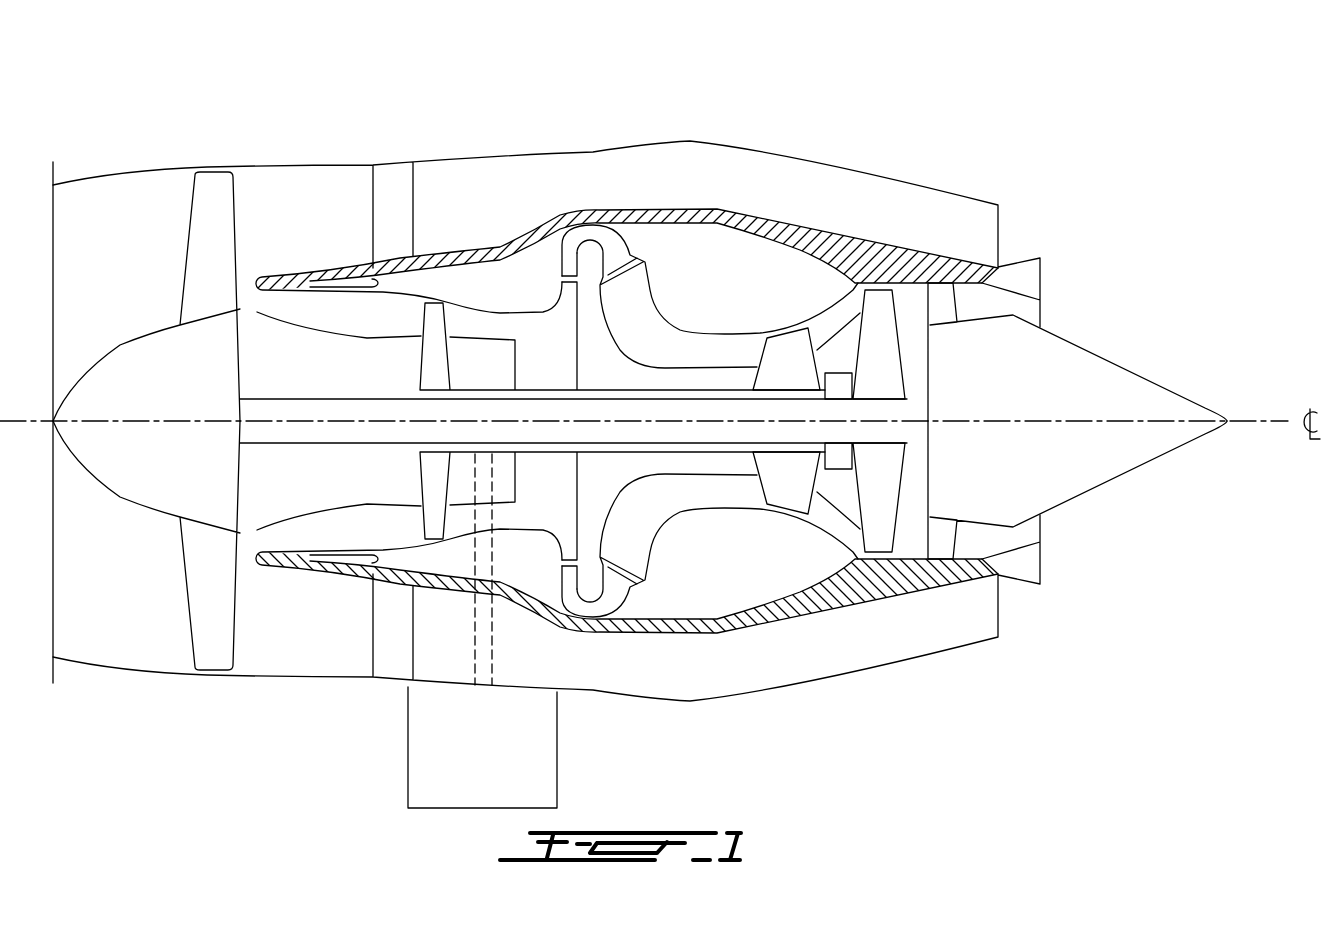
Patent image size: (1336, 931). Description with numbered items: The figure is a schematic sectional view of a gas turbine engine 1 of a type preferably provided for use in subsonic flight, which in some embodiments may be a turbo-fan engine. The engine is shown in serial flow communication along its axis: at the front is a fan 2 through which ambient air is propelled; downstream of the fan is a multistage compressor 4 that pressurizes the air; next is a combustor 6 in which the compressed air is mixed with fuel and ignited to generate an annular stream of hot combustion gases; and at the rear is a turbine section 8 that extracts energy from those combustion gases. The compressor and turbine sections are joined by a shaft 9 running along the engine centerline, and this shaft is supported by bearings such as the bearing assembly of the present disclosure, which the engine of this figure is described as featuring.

The gas turbine engine 1 is at (890, 135).
The fan 2 is at (208, 582).
The multistage compressor 4 is at (498, 327).
The combustor 6 is at (697, 273).
The turbine section 8 is at (835, 490).
The shaft 9 is at (593, 397).